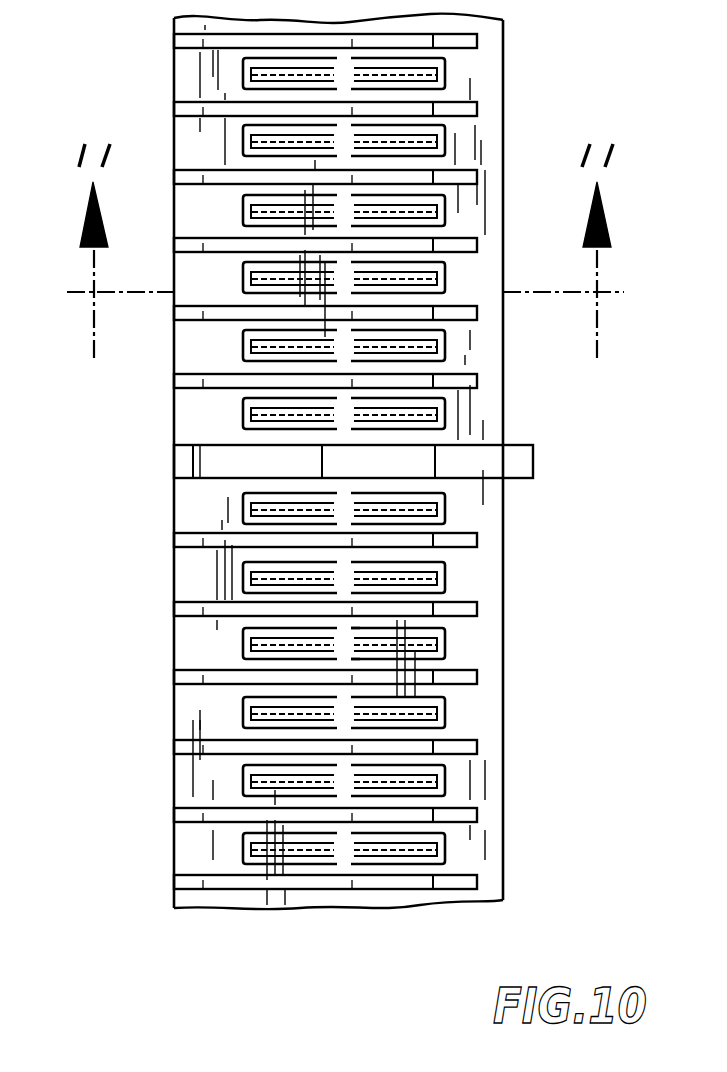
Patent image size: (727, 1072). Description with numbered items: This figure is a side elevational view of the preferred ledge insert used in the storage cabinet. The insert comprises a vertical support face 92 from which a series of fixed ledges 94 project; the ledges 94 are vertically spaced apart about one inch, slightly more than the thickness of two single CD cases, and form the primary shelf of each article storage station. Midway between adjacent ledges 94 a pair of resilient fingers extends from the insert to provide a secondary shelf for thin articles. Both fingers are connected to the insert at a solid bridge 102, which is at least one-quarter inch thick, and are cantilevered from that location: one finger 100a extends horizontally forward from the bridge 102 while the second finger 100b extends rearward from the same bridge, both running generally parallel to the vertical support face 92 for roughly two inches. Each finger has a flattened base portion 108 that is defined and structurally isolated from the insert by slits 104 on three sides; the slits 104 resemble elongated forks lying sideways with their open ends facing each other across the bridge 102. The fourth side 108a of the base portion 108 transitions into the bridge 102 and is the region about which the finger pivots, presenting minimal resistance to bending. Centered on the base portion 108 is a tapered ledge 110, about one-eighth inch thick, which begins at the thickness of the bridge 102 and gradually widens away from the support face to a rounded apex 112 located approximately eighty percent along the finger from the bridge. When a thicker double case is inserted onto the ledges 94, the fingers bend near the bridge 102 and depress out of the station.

The vertical support face 92 is at (187, 72).
The fixed ledges 94 is at (480, 35).
The first finger 100a is at (430, 496).
The second finger 100b is at (278, 493).
The bridge 102 is at (343, 652).
The slits 104 is at (413, 562).
The base portion 108 is at (417, 654).
The fourth side of base portion 108a is at (357, 662).
The tapered ledge 110 is at (418, 652).
The rounded apex 112 is at (440, 645).